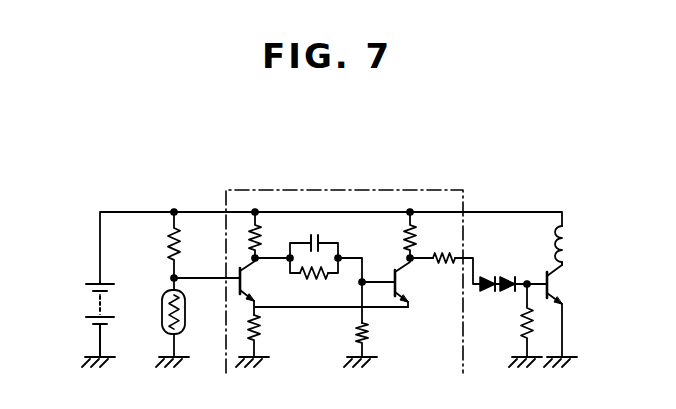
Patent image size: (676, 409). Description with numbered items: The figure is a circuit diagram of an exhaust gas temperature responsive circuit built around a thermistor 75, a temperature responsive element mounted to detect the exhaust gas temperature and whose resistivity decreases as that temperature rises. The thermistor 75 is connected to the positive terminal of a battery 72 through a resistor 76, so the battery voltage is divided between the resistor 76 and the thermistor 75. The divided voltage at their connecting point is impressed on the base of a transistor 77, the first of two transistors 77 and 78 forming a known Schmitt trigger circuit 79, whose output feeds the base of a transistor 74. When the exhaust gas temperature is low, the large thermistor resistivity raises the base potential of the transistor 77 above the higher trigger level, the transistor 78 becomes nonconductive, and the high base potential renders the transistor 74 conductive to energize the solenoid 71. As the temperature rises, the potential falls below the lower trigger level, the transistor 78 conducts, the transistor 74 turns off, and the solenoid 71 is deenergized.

The solenoid 71 is at (571, 233).
The battery 72 is at (95, 283).
The transistor 74 is at (564, 287).
The thermistor 75 is at (168, 289).
The resistor 76 is at (168, 233).
The transistor 77 is at (262, 273).
The transistor 78 is at (404, 301).
The Schmitt trigger circuit 79 is at (396, 164).